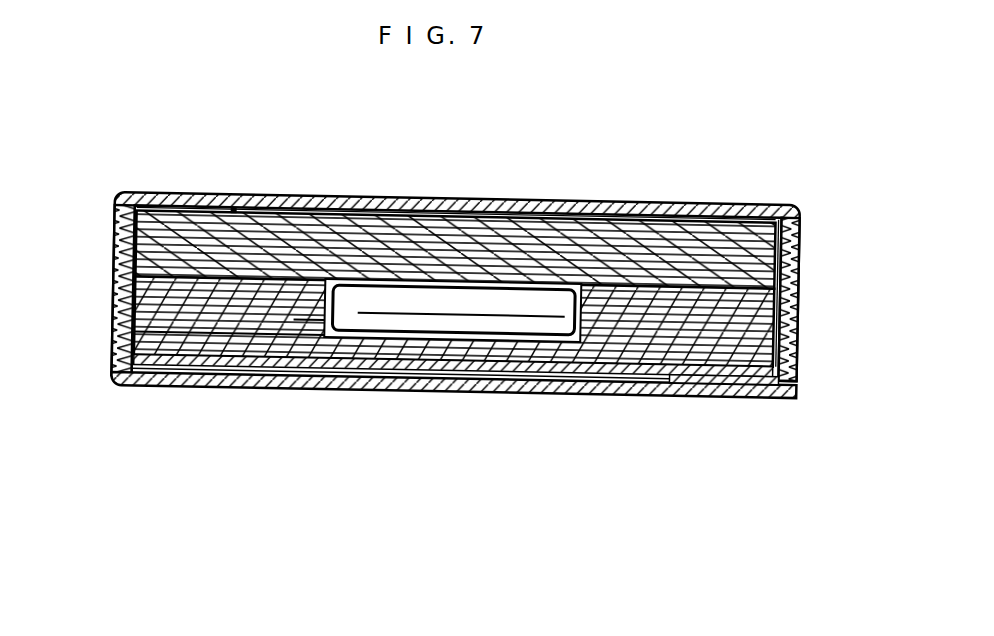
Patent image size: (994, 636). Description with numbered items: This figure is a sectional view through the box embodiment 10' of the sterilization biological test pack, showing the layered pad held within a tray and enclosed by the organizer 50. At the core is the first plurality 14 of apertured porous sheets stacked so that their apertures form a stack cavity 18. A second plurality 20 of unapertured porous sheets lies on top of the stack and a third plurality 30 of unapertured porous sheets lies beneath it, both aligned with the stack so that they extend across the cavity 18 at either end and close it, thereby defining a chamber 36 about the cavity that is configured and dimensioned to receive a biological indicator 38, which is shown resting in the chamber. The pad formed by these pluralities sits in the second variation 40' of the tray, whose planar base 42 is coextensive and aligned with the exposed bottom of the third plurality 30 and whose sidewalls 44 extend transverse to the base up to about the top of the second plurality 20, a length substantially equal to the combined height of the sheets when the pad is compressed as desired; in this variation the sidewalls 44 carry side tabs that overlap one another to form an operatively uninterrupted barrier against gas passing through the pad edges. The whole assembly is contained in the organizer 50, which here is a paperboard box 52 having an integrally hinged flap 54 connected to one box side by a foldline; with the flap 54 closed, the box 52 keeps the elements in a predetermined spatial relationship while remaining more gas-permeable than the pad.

The box embodiment of the sterilization biological test pack 10' is at (155, 143).
The first plurality of apertured planar sheets 14 is at (161, 313).
The stack cavity 18 is at (318, 318).
The second plurality of unapertured planar sheets 20 is at (163, 259).
The third plurality of unapertured planar sheets 30 is at (218, 340).
The chamber 36 is at (468, 283).
The biological indicator 38 is at (410, 318).
The second variation of the tray 40' is at (401, 413).
The tray base 42 is at (732, 397).
The tray sidewalls 44 is at (786, 276).
The organizer 50 is at (722, 201).
The box 52 is at (590, 207).
The integrally hinged flap 54 is at (207, 205).